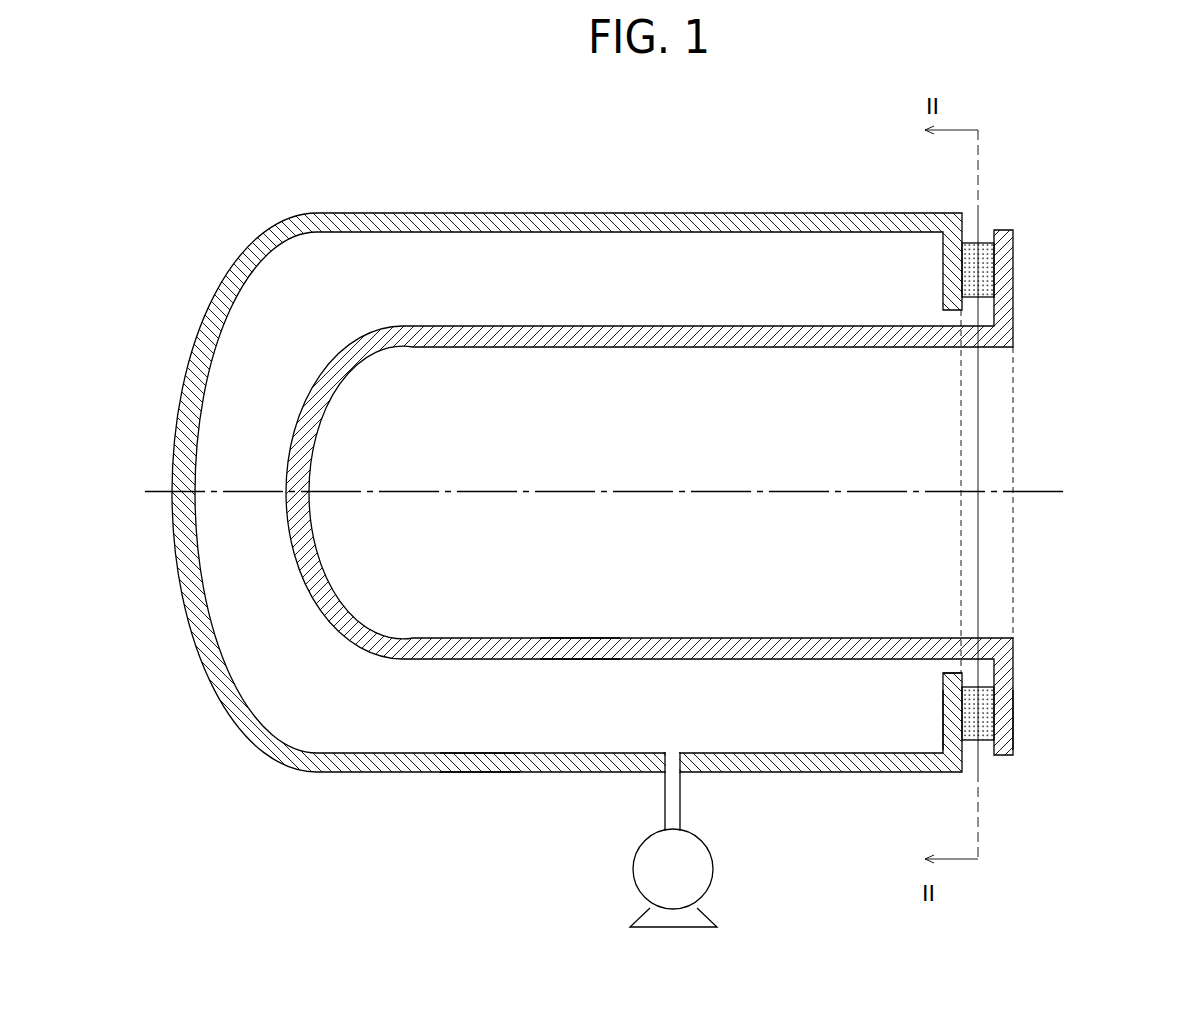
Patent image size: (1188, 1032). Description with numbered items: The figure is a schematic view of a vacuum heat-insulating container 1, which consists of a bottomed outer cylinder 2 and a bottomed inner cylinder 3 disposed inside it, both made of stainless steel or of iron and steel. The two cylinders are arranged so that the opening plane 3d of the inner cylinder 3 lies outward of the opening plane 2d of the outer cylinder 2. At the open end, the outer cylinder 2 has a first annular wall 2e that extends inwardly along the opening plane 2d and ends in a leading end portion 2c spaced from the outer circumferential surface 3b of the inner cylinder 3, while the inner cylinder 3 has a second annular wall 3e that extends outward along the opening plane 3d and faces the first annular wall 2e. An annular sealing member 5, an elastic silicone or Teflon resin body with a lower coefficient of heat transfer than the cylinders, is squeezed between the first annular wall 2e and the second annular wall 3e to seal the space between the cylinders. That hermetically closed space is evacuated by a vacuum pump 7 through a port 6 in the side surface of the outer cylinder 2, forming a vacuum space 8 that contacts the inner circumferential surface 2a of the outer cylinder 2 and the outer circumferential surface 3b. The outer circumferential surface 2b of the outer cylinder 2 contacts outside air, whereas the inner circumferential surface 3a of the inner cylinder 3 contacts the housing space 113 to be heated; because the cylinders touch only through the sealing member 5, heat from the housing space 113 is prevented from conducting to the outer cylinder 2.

The vacuum heat-insulating container 1 is at (614, 153).
The outer cylinder 2 is at (520, 769).
The inner circumferential surface of the outer cylinder 2a is at (486, 742).
The outer circumferential surface of the outer cylinder 2b is at (487, 783).
The leading end portion 2c is at (955, 664).
The opening plane of the outer cylinder 2d is at (962, 528).
The first annular wall 2e is at (950, 718).
The inner cylinder 3 is at (625, 645).
The inner circumferential surface of the inner cylinder 3a is at (578, 628).
The outer circumferential surface of the inner cylinder 3b is at (577, 669).
The opening plane of the inner cylinder 3d is at (1013, 595).
The second annular wall 3e is at (1003, 707).
The sealing member 5 is at (980, 725).
The port 6 is at (673, 806).
The vacuum pump 7 is at (640, 892).
The vacuum space 8 is at (700, 685).
The housing space 113 is at (890, 425).